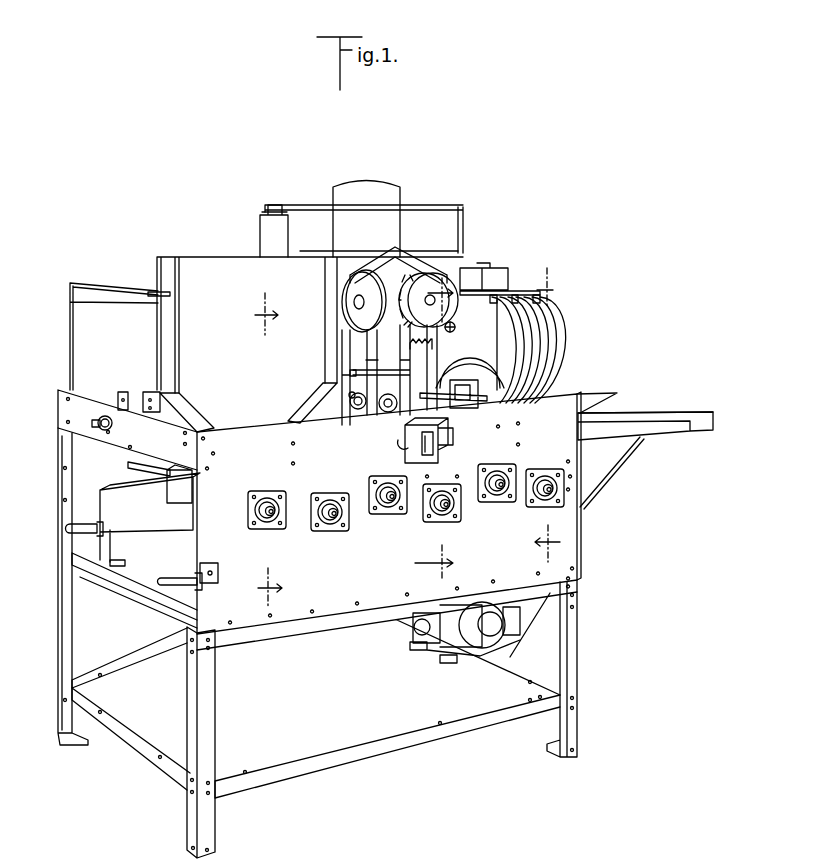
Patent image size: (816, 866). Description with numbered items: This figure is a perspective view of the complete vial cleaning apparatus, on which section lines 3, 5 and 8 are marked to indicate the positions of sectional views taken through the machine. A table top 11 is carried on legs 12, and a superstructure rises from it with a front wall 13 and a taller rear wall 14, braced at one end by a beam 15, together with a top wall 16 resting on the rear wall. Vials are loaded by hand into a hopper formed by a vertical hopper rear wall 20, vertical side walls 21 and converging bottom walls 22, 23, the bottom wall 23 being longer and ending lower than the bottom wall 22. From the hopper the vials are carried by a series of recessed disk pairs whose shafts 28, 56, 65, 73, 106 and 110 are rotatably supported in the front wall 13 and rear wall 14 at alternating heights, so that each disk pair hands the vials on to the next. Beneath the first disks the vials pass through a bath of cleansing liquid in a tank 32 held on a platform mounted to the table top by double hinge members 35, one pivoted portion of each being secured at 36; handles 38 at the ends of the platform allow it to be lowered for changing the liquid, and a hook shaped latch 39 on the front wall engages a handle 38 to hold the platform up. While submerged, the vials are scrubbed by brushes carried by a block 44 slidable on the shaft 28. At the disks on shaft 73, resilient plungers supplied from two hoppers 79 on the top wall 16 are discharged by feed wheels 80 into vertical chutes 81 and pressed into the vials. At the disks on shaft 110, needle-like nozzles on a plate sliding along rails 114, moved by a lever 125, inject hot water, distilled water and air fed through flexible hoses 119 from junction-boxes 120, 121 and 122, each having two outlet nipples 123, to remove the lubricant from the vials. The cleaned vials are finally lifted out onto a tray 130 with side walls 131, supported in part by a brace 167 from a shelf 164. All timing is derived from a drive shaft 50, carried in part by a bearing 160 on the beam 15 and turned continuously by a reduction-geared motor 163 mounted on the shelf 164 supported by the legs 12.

The section line 3 is at (260, 446).
The section line 5 is at (426, 429).
The section line 8 is at (553, 415).
The table top 11 is at (70, 576).
The legs 12 is at (57, 638).
The front wall 13 is at (583, 396).
The rear wall 14 is at (80, 333).
The beam 15 is at (63, 413).
The top wall 16 is at (126, 289).
The hopper rear wall 20 is at (190, 270).
The hopper side walls 21 is at (168, 331).
The hopper bottom wall 22 is at (188, 413).
The hopper bottom wall 23 is at (317, 396).
The shaft 28 is at (276, 525).
The tank 32 is at (100, 491).
The double hinge members 35 is at (110, 560).
The pivoted portion securing point 36 is at (122, 572).
The handles 38 is at (66, 527).
The hook shaped latch 39 is at (208, 562).
The block 44 is at (169, 494).
The drive shaft 50 is at (100, 426).
The shaft 56 is at (337, 530).
The shaft 65 is at (392, 510).
The shaft 73 is at (455, 520).
The hoppers 79 is at (296, 215).
The feed wheels 80 is at (350, 278).
The chutes 81 is at (412, 364).
The shaft 106 is at (506, 481).
The shaft 110 is at (547, 500).
The rails 114 is at (462, 402).
The flexible hoses 119 is at (552, 352).
The junction-box 120 is at (456, 328).
The junction-box 121 is at (513, 291).
The junction-box 122 is at (548, 296).
The outlet nipples 123 is at (494, 299).
The lever 125 is at (437, 349).
The tray 130 is at (668, 433).
The side walls 131 is at (670, 412).
The bearing 160 is at (105, 415).
The reduction-geared motor 163 is at (500, 643).
The shelf 164 is at (332, 766).
The brace 167 is at (612, 485).